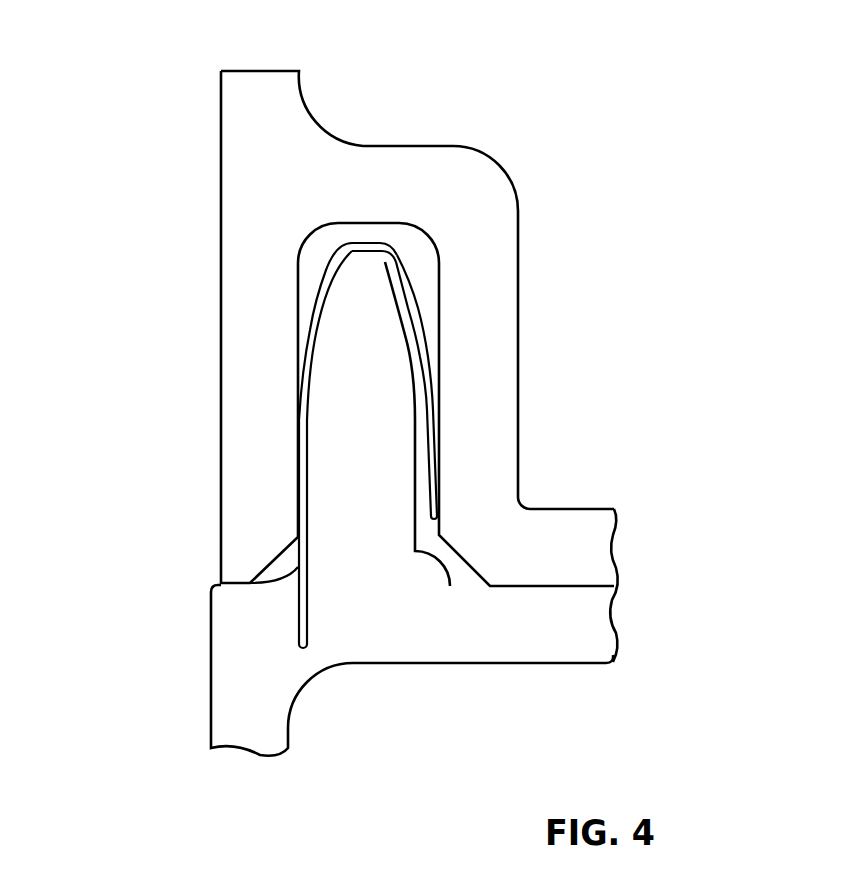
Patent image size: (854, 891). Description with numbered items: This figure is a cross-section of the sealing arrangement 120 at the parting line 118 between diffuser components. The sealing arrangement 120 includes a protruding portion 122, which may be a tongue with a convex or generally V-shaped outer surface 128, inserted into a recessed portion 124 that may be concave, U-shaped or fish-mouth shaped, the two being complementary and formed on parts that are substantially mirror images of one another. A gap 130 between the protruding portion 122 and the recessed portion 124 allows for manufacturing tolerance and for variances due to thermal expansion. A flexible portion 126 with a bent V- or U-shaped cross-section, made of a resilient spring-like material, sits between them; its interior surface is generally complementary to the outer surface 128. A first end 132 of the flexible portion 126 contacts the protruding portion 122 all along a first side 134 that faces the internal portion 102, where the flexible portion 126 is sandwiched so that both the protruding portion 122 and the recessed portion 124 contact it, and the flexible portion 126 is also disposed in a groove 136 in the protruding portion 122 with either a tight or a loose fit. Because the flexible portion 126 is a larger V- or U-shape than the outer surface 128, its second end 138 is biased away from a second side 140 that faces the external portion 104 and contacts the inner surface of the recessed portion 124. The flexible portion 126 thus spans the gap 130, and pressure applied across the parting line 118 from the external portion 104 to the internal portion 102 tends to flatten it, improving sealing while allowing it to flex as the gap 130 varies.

The internal portion 102 is at (136, 252).
The external portion 104 is at (757, 382).
The parting line 118 is at (617, 586).
The sealing arrangement 120 is at (414, 146).
The protruding portion 122 is at (373, 540).
The recessed portion 124 is at (470, 277).
The flexible portion 126 is at (418, 322).
The outer surface 128 is at (390, 279).
The gap 130 is at (420, 448).
The first end 132 is at (297, 563).
The first side 134 is at (327, 460).
The groove 136 is at (309, 625).
The second end 138 is at (440, 485).
The second side 140 is at (417, 505).